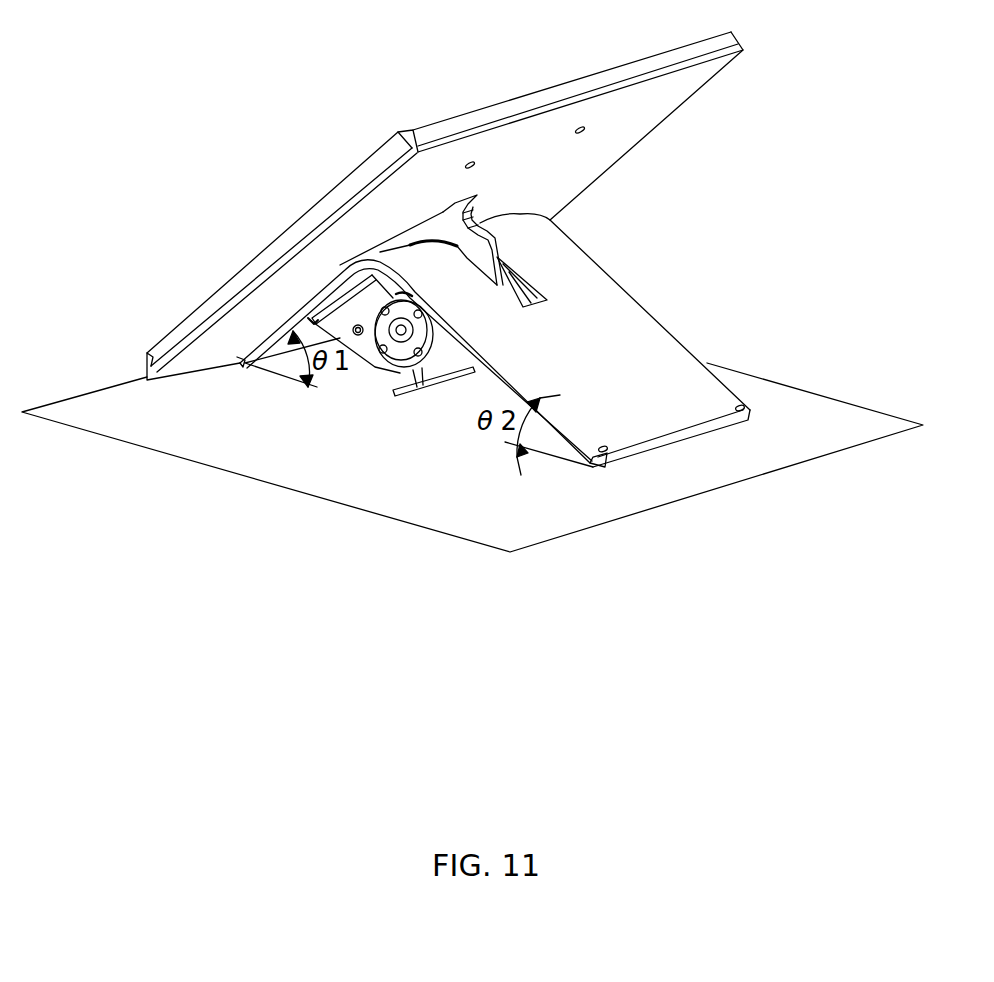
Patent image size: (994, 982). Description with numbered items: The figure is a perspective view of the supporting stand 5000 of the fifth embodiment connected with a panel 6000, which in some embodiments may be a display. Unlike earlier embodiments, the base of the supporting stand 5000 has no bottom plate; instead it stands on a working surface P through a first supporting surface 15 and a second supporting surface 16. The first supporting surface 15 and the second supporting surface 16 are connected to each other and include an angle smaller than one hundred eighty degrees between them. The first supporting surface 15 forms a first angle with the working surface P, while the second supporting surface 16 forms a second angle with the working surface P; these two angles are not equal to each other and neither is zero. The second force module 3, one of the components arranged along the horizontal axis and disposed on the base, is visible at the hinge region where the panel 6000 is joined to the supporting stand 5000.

The panel 6000 is at (512, 140).
The first supporting surface 15 is at (300, 308).
The second supporting surface 16 is at (622, 318).
The second force module 3 is at (380, 362).
The supporting stand 5000 is at (418, 402).
The working surface P is at (825, 410).